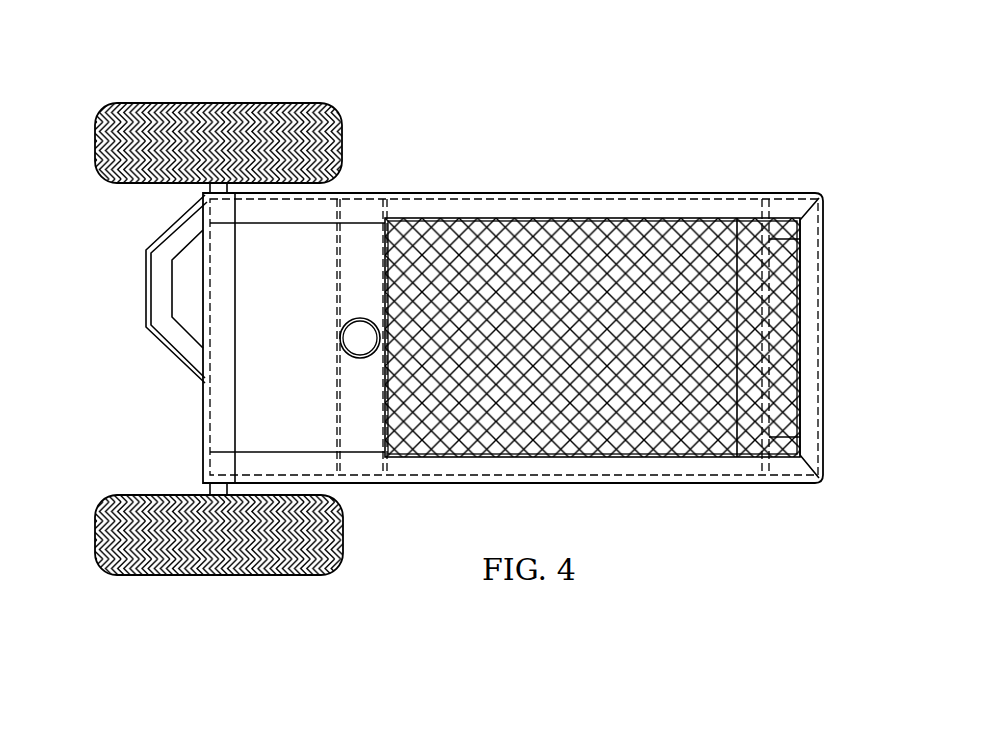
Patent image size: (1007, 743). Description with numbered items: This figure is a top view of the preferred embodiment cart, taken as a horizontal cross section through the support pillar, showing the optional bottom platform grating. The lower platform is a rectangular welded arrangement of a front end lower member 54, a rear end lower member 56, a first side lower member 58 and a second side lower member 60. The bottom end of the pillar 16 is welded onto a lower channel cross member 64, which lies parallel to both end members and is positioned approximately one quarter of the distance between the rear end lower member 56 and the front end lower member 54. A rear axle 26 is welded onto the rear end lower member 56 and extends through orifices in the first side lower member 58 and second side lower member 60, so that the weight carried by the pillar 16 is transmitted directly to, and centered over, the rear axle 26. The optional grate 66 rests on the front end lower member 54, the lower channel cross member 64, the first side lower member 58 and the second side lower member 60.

The pillar 16 is at (362, 328).
The rear axle 26 is at (210, 186).
The front end lower member 54 is at (823, 308).
The rear end lower member 56 is at (220, 412).
The first side lower member 58 is at (628, 204).
The second side lower member 60 is at (673, 472).
The lower channel cross member 64 is at (360, 425).
The grate 66 is at (455, 217).